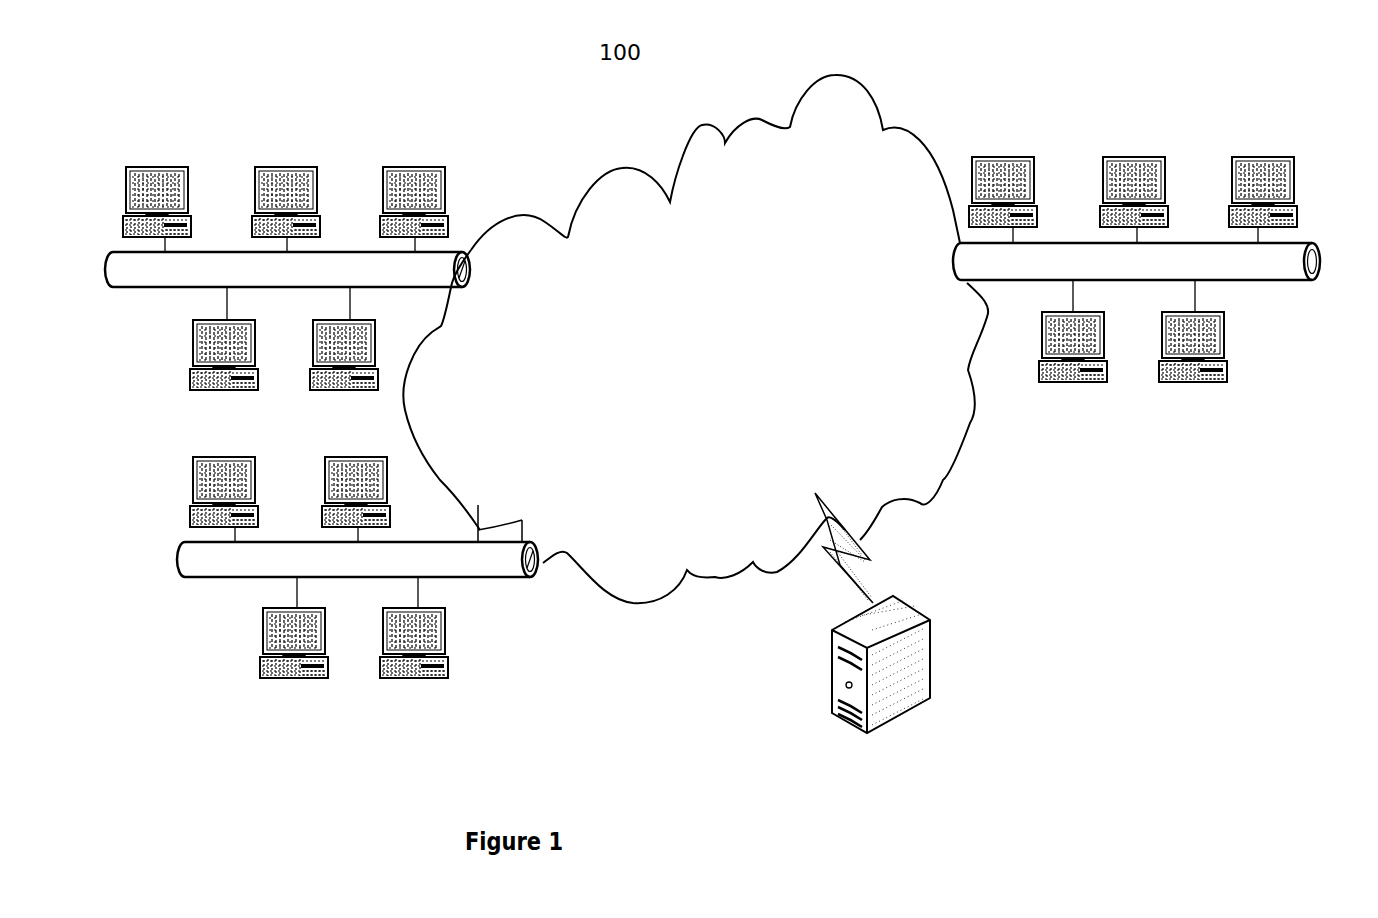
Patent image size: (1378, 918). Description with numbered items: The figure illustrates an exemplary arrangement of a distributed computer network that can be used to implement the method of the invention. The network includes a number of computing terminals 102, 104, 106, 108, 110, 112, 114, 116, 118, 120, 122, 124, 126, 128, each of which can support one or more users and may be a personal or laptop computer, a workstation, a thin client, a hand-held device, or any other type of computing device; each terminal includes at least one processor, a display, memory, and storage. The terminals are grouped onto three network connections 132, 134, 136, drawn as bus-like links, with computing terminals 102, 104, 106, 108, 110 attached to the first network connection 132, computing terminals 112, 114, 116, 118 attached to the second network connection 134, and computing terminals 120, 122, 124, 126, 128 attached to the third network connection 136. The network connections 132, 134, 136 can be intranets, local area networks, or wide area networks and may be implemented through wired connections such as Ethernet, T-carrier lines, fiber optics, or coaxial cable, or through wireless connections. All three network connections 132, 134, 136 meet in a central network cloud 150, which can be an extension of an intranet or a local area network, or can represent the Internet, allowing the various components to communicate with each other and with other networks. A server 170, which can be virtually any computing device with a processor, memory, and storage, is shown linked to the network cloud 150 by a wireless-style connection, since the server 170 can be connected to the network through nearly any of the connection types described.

The computing terminal 102 is at (165, 167).
The computing terminal 104 is at (287, 165).
The computing terminal 106 is at (413, 165).
The computing terminal 108 is at (190, 328).
The computing terminal 110 is at (310, 327).
The computing terminal 112 is at (224, 455).
The computing terminal 114 is at (354, 456).
The computing terminal 116 is at (305, 678).
The computing terminal 118 is at (450, 665).
The computing terminal 120 is at (1003, 158).
The computing terminal 122 is at (1135, 157).
The computing terminal 124 is at (1260, 157).
The computing terminal 126 is at (1070, 382).
The computing terminal 128 is at (1190, 382).
The network connection 132 is at (148, 290).
The network connection 134 is at (175, 560).
The network connection 136 is at (1316, 265).
The network cloud 150 is at (708, 578).
The server 170 is at (933, 660).